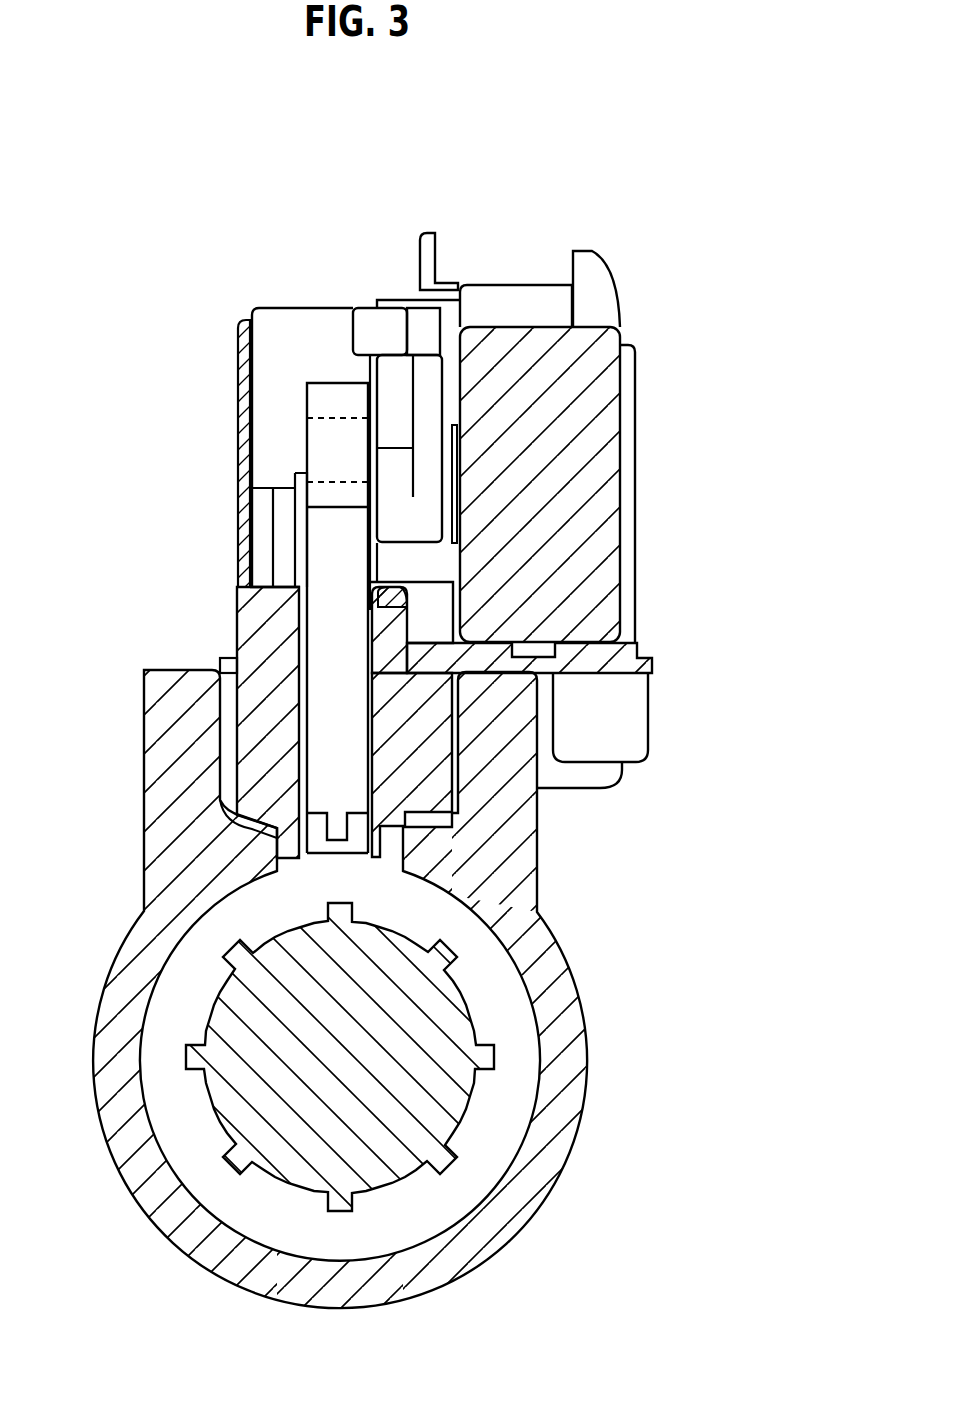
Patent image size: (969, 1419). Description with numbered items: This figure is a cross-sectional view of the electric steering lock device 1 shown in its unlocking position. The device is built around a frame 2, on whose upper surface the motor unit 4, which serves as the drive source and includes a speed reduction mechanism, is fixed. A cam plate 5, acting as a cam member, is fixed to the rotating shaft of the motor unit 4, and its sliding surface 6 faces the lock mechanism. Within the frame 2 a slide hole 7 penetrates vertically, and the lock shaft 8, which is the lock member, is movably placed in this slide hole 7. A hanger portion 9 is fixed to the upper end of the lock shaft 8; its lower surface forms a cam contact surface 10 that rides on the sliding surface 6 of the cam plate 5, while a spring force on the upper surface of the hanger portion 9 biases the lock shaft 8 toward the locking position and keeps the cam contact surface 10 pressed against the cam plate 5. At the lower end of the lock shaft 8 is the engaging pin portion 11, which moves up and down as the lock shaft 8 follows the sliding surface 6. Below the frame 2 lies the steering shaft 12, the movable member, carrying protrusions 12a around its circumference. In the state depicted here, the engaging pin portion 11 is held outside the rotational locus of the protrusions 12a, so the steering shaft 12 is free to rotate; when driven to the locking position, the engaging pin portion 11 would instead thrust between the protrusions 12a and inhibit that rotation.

The electric steering lock device 1 is at (214, 267).
The frame 2 is at (248, 722).
The motor unit 4 is at (538, 340).
The cam plate 5 is at (458, 414).
The sliding surface 6 is at (397, 378).
The slide hole 7 is at (315, 657).
The lock shaft 8 is at (325, 540).
The hanger portion 9 is at (262, 405).
The cam contact surface 10 is at (372, 365).
The engaging pin portion 11 is at (335, 832).
The steering shaft 12 is at (452, 1096).
The protrusions 12a is at (440, 955).